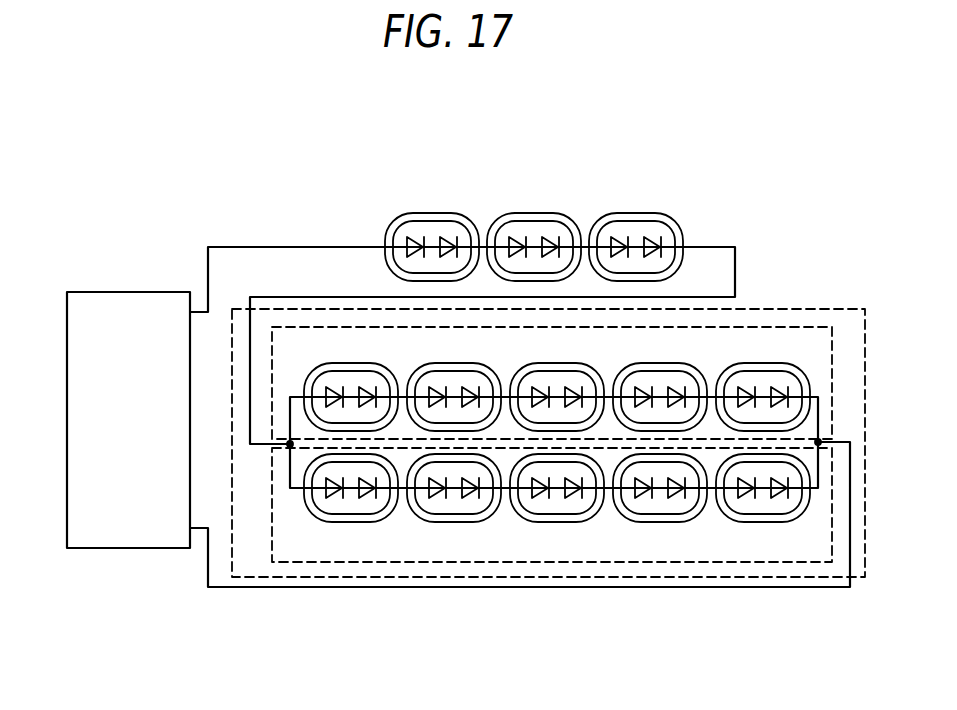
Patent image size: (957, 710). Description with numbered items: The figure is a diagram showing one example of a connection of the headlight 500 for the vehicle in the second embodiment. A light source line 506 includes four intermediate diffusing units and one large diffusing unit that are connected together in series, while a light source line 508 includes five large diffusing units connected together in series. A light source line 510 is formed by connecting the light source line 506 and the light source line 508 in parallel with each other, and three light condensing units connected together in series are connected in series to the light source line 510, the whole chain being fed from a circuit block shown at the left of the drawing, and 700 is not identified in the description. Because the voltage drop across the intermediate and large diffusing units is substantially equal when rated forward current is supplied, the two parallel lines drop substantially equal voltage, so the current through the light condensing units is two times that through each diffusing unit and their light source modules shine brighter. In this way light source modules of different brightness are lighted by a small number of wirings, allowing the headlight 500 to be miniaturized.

The headlight for the vehicle 500 is at (84, 172).
The lighting circuit 700 is at (128, 291).
The light source line 506 is at (300, 327).
The light source line 508 is at (297, 562).
The light source line 510 is at (773, 308).